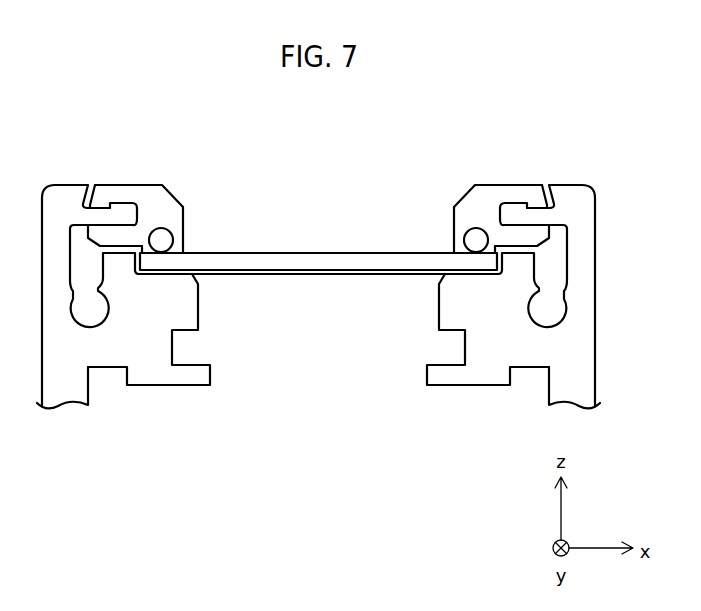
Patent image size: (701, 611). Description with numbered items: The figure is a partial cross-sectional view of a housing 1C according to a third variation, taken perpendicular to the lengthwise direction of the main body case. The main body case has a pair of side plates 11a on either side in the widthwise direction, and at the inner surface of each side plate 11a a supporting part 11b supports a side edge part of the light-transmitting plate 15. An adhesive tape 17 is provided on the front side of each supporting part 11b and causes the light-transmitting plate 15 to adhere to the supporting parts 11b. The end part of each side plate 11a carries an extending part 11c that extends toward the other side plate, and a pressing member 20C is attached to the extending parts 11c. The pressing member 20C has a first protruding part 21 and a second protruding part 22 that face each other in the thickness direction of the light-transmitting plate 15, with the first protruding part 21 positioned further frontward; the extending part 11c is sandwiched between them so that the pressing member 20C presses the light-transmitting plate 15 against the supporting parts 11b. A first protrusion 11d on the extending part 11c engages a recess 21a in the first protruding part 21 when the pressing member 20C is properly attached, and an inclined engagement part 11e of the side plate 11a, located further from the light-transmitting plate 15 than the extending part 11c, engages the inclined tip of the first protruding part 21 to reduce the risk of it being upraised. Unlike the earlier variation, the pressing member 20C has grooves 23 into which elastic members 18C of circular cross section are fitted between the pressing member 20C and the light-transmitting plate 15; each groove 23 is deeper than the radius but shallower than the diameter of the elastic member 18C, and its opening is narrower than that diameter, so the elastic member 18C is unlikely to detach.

The housing 1C is at (641, 136).
The side plate 11a is at (590, 350).
The supporting part 11b is at (188, 293).
The extending part 11c is at (518, 218).
The first protrusion 11d is at (535, 198).
The engagement part 11e is at (563, 192).
The light-transmitting plate 15 is at (318, 258).
The adhesive tape 17 is at (157, 275).
The elastic member 18C is at (173, 240).
The groove 23 is at (318, 240).
The pressing member 20C is at (170, 200).
The first protruding part 21 is at (518, 200).
The recess 21a is at (510, 203).
The second protruding part 22 is at (533, 237).